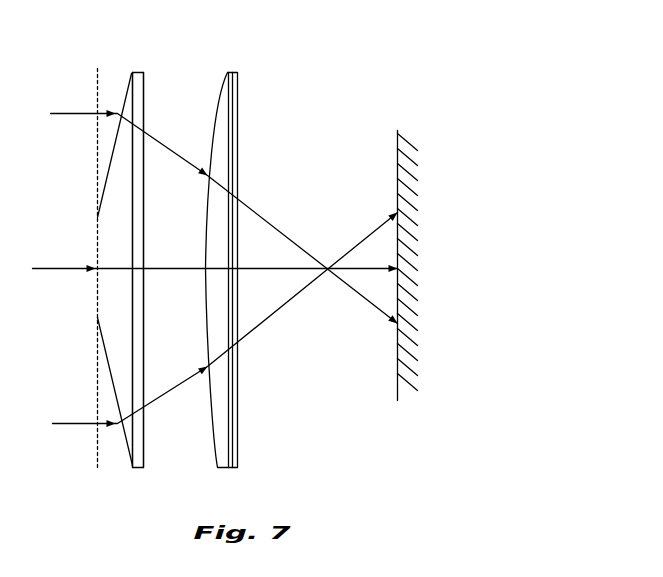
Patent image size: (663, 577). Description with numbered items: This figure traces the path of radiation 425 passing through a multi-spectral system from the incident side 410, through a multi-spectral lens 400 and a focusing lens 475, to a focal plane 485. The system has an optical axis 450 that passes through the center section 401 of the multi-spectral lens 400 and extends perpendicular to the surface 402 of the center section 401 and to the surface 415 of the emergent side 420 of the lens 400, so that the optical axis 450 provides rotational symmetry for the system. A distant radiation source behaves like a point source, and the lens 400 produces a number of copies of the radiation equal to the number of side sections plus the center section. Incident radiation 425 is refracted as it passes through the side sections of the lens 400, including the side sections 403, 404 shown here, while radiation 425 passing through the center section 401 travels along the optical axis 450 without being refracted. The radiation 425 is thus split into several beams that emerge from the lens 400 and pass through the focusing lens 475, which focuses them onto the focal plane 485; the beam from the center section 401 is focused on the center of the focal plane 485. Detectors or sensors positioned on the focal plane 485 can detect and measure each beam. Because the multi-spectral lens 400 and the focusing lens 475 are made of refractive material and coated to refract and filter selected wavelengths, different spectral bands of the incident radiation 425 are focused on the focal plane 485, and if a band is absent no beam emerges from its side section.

The multi-spectral lens 400 is at (109, 261).
The center section 401 is at (113, 243).
The surface of the center section 402 is at (97, 318).
The side section 403 is at (117, 162).
The side section 404 is at (122, 377).
The incident side 410 is at (60, 269).
The surface of the emergent side 415 is at (143, 430).
The emergent side 420 is at (297, 362).
The radiation 425 is at (87, 112).
The optical axis 450 is at (273, 268).
The focusing lens 475 is at (218, 75).
The focal plane 485 is at (397, 172).